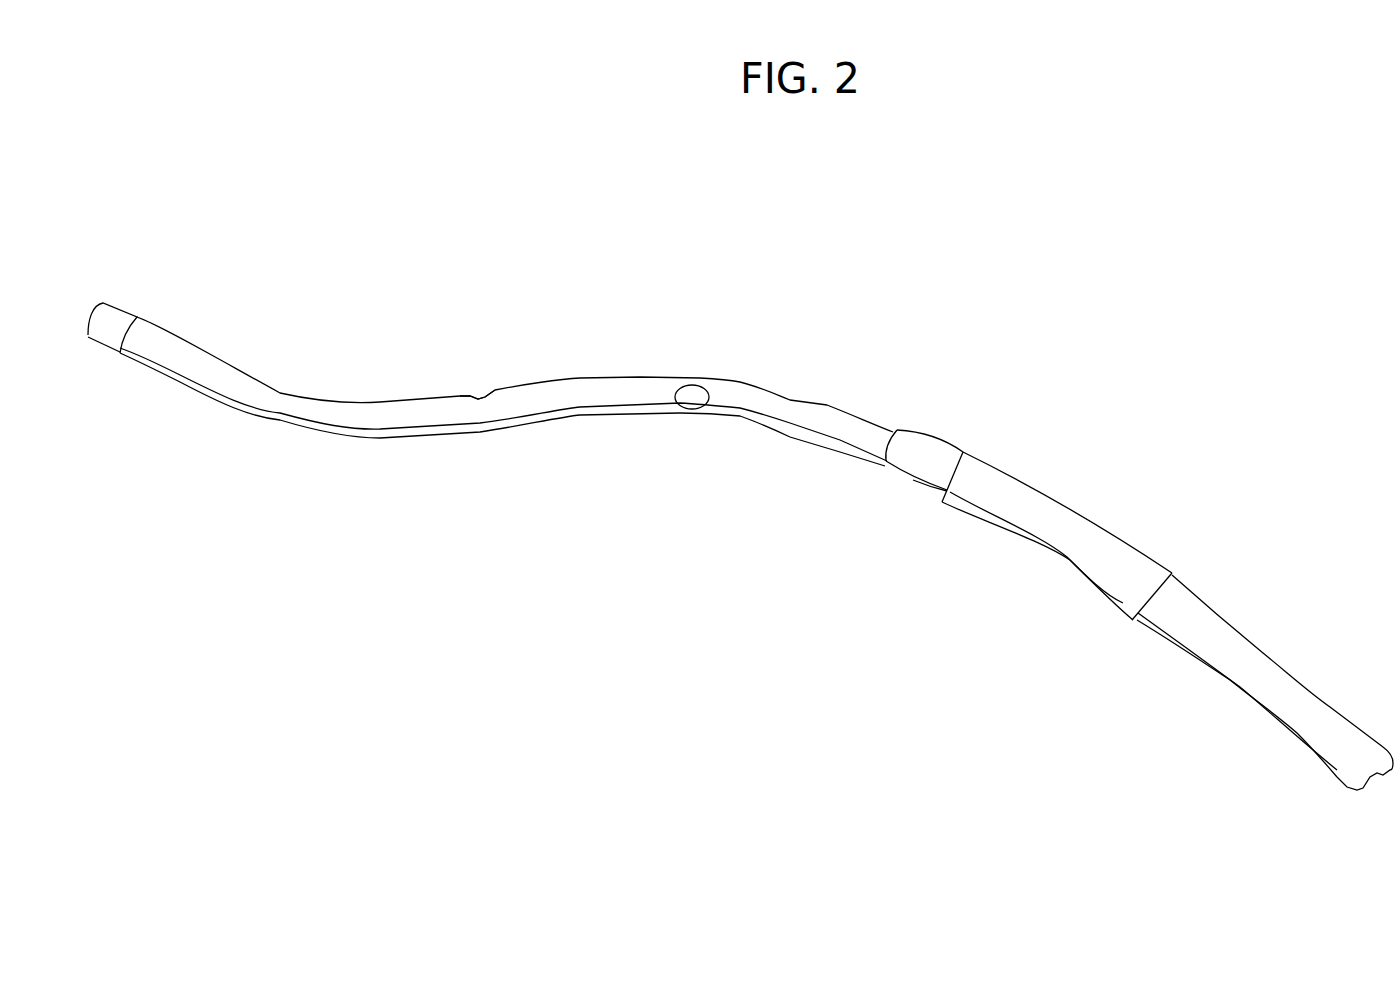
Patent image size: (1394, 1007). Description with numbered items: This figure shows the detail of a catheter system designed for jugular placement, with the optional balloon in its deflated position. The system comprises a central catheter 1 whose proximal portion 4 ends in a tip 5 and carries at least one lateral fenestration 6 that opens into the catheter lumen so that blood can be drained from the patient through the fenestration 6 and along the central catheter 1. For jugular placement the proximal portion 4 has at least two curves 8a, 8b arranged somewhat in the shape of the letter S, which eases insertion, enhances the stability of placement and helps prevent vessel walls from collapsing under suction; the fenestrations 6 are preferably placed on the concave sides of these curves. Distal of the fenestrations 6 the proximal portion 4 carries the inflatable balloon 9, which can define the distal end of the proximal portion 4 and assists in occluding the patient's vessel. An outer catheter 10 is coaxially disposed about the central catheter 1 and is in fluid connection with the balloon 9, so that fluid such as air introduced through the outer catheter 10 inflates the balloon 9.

The central catheter 1 is at (828, 404).
The proximal portion 4 is at (1102, 642).
The tip 5 is at (110, 320).
The lateral fenestration 6 is at (478, 398).
The curve 8a is at (165, 482).
The curve 8b is at (527, 530).
The balloon 9 is at (1062, 505).
The outer catheter 10 is at (1263, 653).